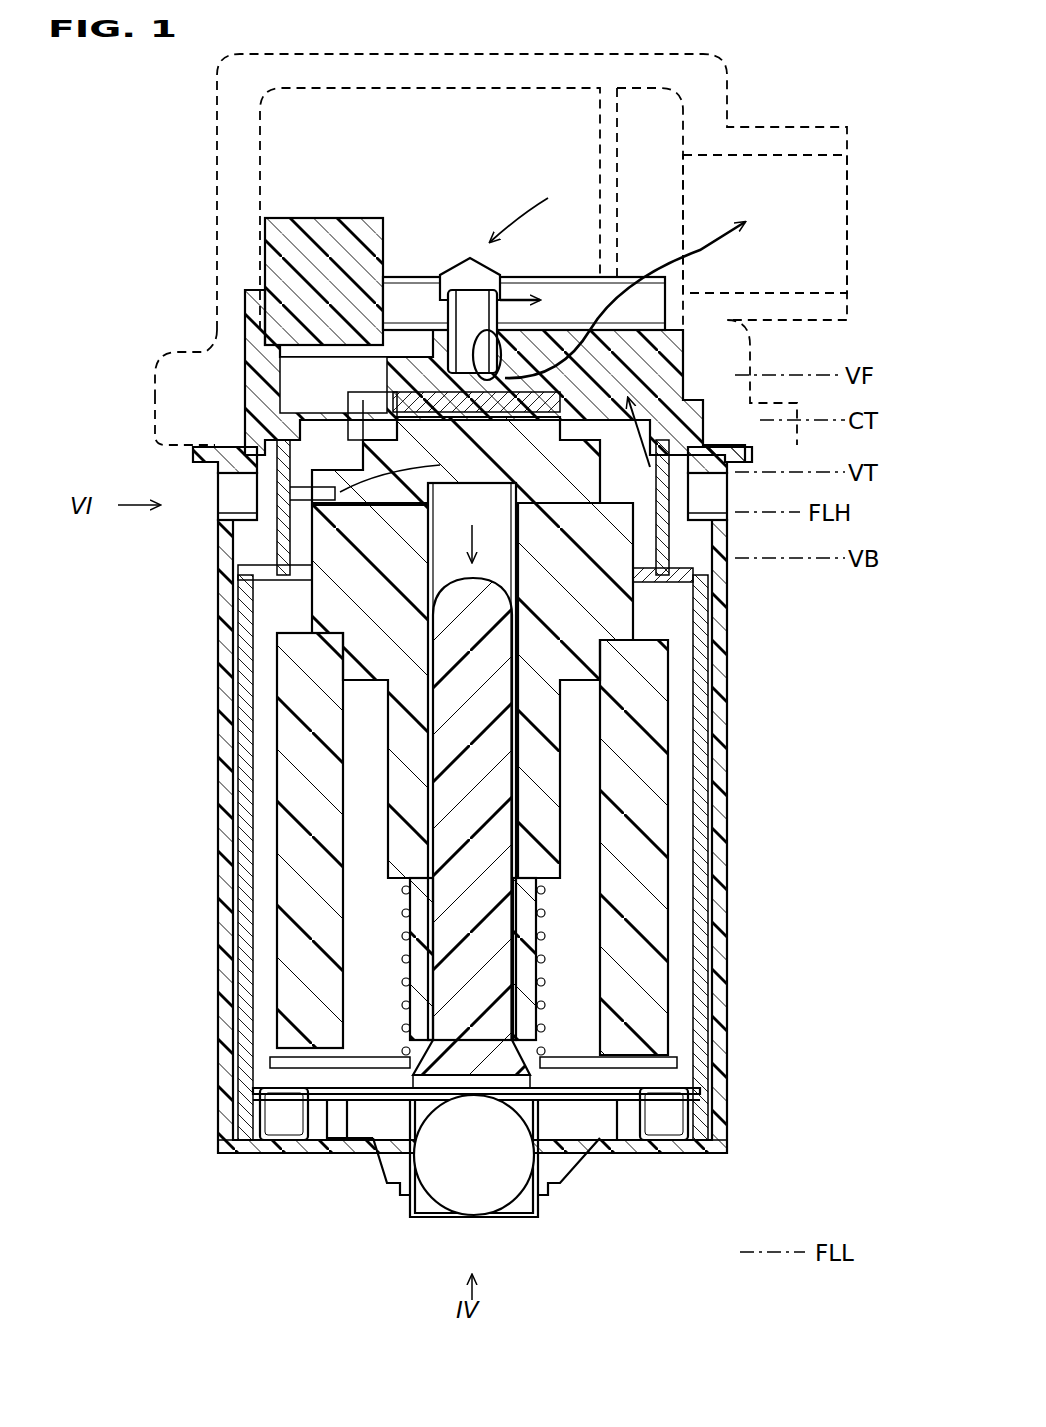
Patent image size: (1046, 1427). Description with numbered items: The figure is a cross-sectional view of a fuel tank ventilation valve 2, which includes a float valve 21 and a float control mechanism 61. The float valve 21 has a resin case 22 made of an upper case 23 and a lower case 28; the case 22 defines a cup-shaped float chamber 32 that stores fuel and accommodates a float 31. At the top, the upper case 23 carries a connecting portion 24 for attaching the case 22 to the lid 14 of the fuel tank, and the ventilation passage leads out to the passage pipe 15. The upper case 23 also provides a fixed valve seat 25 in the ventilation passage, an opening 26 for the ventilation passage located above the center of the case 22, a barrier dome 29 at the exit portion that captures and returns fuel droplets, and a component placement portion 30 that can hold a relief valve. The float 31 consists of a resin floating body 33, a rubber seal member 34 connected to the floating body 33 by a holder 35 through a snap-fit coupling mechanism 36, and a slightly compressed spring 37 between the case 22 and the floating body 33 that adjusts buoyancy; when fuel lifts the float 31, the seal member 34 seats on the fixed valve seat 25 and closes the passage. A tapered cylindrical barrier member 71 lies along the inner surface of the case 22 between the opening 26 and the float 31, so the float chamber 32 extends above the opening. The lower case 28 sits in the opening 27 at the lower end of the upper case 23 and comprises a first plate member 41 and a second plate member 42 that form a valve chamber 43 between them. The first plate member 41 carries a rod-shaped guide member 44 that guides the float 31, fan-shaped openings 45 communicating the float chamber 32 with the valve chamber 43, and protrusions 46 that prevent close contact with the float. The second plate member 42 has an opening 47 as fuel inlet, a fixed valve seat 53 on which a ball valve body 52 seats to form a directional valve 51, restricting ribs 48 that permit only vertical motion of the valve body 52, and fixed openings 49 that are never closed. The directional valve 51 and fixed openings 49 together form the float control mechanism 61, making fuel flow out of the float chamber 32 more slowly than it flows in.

The fuel tank ventilation valve 2 is at (521, 206).
The lid 14 is at (217, 172).
The passage pipe 15 is at (822, 229).
The float valve 21 is at (417, 800).
The case 22 is at (417, 800).
The upper case 23 is at (238, 882).
The connecting portion 24 is at (232, 398).
The fixed valve seat 25 is at (447, 372).
The opening 26 is at (208, 487).
The opening 27 is at (217, 1127).
The lower case 28 is at (257, 1190).
The barrier dome 29 is at (452, 268).
The component placement portion 30 is at (318, 218).
The float 31 is at (290, 612).
The float chamber 32 is at (655, 618).
The floating body 33 is at (278, 835).
The seal member 34 is at (440, 398).
The holder 35 is at (600, 380).
The coupling mechanism 36 is at (330, 488).
The spring 37 is at (400, 963).
The first plate member 41 is at (215, 1153).
The second plate member 42 is at (320, 1150).
The valve chamber 43 is at (585, 1130).
The guide member 44 is at (445, 585).
The opening 45 is at (365, 1063).
The protrusions 46 is at (660, 1056).
The opening 47 is at (455, 1232).
The restricting rib 48 is at (385, 1165).
The fixed opening 49 is at (403, 1195).
The directional valve 51 is at (570, 1215).
The valve body 52 is at (478, 1185).
The fixed valve seat 53 is at (540, 1212).
The float control mechanism 61 is at (585, 1200).
The barrier member 71 is at (283, 562).